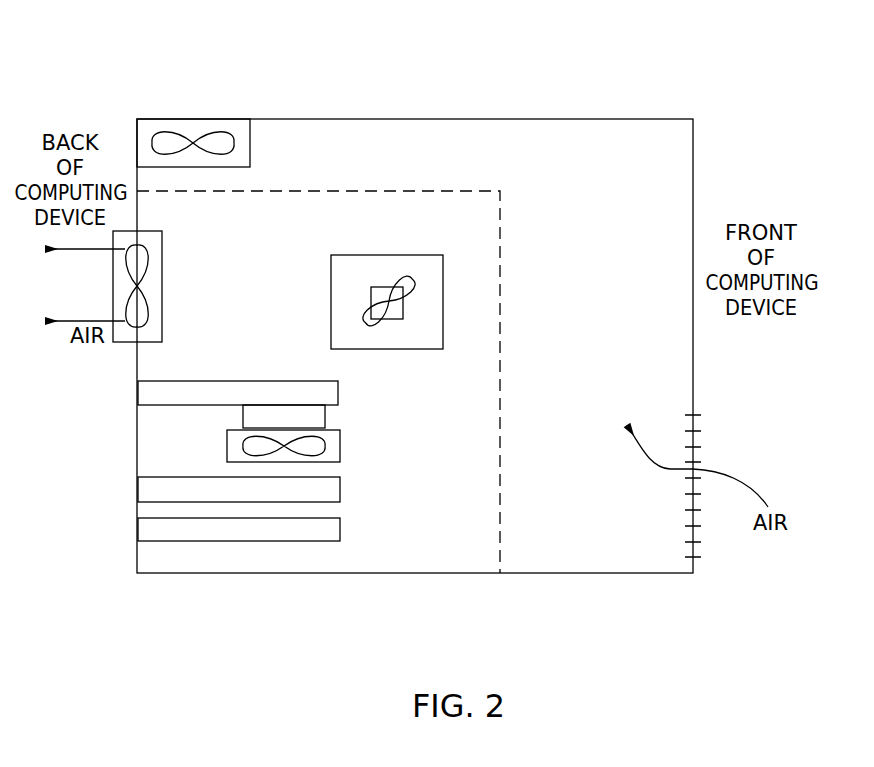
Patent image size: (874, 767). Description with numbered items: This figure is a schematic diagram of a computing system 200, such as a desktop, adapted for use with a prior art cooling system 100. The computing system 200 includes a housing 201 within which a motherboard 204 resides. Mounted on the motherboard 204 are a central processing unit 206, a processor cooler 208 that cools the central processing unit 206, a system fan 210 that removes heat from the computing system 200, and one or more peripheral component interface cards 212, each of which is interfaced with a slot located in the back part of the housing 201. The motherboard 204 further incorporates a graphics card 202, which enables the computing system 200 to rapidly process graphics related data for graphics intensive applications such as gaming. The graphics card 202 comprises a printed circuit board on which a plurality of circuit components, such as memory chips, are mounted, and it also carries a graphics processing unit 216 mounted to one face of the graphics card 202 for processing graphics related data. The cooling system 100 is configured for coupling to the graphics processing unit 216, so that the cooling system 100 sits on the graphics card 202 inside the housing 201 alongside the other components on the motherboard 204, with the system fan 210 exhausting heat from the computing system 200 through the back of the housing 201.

The cooling system 100 is at (342, 440).
The computing system 200 is at (408, 88).
The housing 201 is at (580, 119).
The graphics card 202 is at (148, 393).
The motherboard 204 is at (488, 543).
The central processing unit (CPU) 206 is at (382, 255).
The processor cooler 208 is at (400, 319).
The system fan 210 is at (118, 283).
The peripheral component interface (PCI) cards 212 is at (153, 490).
The graphics processing unit (GPU) 216 is at (325, 412).